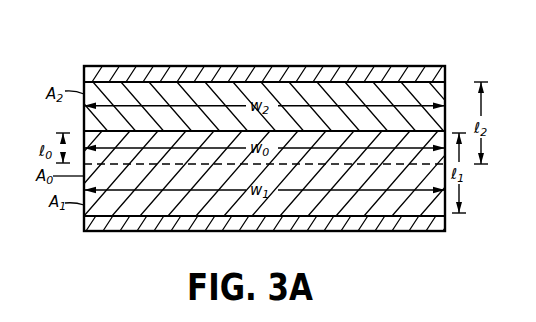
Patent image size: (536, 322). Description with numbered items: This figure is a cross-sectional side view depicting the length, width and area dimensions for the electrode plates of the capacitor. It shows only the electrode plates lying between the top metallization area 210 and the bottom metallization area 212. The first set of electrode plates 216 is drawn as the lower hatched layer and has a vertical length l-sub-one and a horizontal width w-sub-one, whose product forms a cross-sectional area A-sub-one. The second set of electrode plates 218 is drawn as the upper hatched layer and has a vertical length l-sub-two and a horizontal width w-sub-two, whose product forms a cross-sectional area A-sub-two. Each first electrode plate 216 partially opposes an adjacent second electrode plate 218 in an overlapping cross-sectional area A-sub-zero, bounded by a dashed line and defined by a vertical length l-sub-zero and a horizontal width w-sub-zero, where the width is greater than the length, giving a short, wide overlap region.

The top metallization area 210 is at (389, 66).
The second electrode plate 218 is at (131, 92).
The first electrode plate 216 is at (163, 205).
The bottom metallization area 212 is at (415, 222).